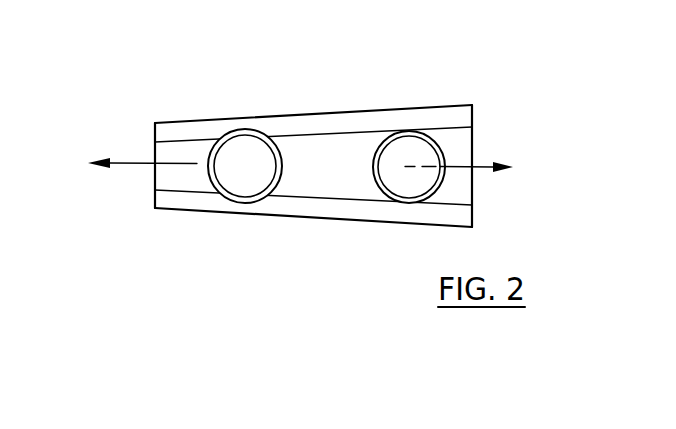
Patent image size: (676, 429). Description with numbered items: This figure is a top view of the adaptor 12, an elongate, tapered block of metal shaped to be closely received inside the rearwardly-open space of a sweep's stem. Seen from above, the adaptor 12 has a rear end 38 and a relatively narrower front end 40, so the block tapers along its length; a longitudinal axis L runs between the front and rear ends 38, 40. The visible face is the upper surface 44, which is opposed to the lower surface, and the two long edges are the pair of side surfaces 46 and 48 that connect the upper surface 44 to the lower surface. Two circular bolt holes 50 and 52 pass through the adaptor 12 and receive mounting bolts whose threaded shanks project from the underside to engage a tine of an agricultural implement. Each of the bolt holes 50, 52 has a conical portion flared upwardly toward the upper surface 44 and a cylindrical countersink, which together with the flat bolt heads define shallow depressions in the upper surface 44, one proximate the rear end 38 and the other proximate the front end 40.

The adaptor 12 is at (295, 147).
The rear end 38 is at (475, 140).
The front end 40 is at (153, 146).
The upper surface 44 is at (363, 137).
The side surface 46 is at (230, 110).
The side surface 48 is at (315, 223).
The bolt hole 50 is at (395, 167).
The bolt hole 52 is at (255, 162).